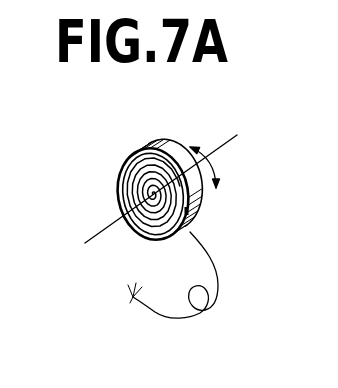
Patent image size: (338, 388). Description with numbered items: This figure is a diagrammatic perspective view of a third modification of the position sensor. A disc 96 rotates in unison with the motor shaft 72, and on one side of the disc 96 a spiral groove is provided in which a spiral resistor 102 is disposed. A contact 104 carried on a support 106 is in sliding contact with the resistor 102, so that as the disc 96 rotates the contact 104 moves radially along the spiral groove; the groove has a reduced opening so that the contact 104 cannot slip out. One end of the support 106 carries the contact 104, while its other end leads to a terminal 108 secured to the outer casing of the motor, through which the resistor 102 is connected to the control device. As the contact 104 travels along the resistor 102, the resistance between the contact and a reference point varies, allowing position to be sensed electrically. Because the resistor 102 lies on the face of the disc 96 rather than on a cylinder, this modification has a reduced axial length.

The spiral resistor 102 is at (118, 172).
The disc 96 is at (163, 143).
The motor shaft 72 is at (103, 228).
The moving contact 104 is at (203, 204).
The support 106 is at (216, 273).
The terminal 108 is at (132, 300).